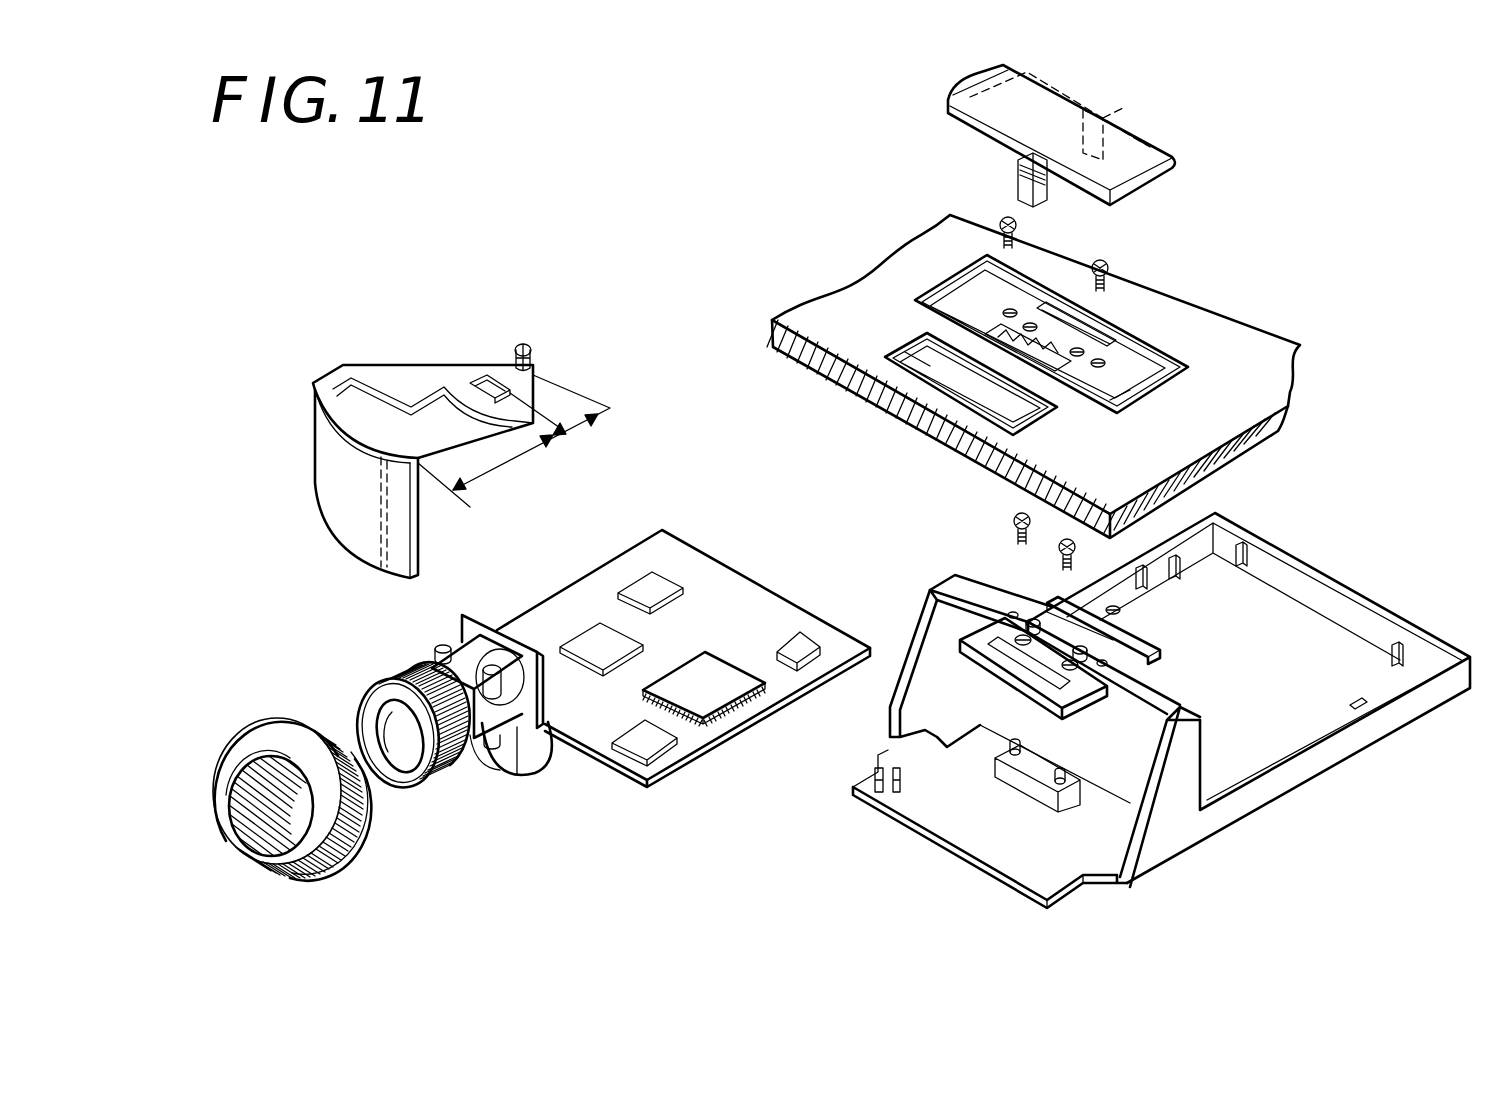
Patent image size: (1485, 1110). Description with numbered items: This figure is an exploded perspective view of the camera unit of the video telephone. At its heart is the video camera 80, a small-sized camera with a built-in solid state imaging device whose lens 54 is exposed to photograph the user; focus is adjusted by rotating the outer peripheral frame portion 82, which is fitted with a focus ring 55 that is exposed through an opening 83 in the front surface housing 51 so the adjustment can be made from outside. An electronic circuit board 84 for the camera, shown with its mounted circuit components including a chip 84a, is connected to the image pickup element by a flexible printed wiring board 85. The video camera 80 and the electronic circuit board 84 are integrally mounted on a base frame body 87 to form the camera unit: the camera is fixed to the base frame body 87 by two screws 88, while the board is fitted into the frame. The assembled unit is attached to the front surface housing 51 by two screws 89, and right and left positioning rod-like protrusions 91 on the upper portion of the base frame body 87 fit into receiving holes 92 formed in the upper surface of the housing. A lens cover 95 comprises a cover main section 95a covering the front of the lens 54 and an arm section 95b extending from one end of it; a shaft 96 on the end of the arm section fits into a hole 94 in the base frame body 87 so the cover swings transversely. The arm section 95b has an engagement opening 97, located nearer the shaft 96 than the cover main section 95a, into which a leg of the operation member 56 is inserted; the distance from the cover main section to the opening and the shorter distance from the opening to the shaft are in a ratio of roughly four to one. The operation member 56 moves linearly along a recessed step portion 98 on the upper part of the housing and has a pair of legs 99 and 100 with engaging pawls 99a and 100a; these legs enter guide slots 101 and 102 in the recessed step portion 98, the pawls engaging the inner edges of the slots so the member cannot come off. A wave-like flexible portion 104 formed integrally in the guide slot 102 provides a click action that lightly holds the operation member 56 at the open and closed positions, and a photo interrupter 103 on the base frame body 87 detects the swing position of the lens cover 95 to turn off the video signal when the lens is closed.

The front surface housing 51 is at (1027, 365).
The lens 54 is at (410, 747).
The focus ring 55 is at (245, 743).
The operation member 56 is at (1076, 143).
The video camera 80 is at (472, 667).
The outer peripheral frame portion 82 is at (397, 746).
The opening 83 is at (913, 357).
The electronic circuit board 84 is at (683, 657).
The IC chip 84a is at (703, 680).
The flexible printed wiring board 85 is at (533, 773).
The base frame body 87 is at (1114, 710).
The screws 88 is at (1013, 525).
The screws 89 is at (1010, 236).
The positioning rod-like protrusions 91 is at (1027, 630).
The receiving holes 92 is at (1030, 317).
The hole 94 is at (1135, 627).
The lens cover 95 is at (402, 424).
The cover main section 95a is at (365, 507).
The arm section 95b is at (410, 380).
The shaft 96 is at (526, 357).
The engagement opening 97 is at (495, 382).
The recessed step portion 98 is at (1130, 378).
The leg 99 is at (1157, 145).
The engaging pawl 99a is at (1120, 117).
The leg 100 is at (1023, 192).
The engaging pawl 100a is at (1018, 165).
The guide slot 101 is at (1093, 308).
The guide slot 102 is at (1000, 404).
The photo interrupter 103 is at (870, 773).
The wave-like flexible portion 104 is at (985, 382).